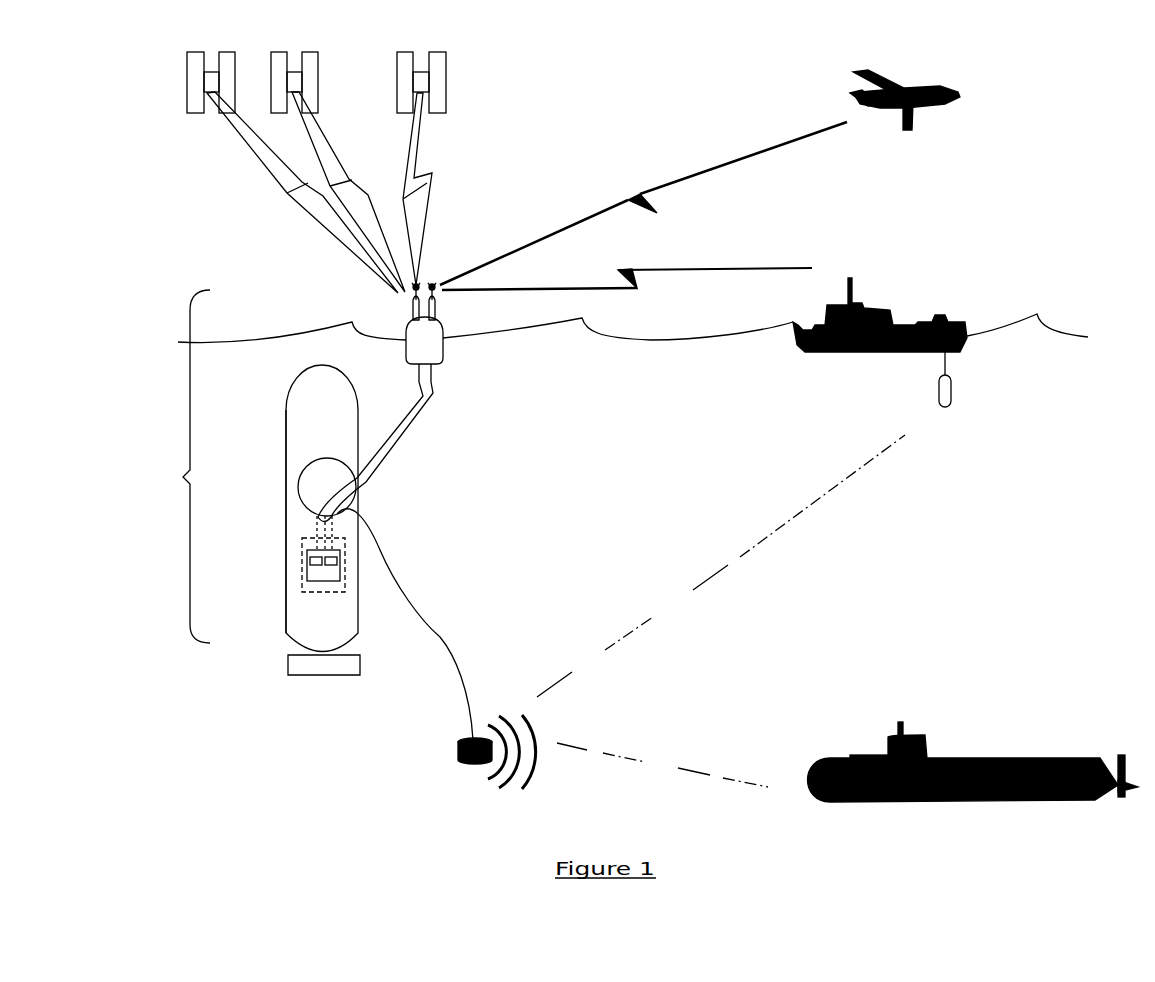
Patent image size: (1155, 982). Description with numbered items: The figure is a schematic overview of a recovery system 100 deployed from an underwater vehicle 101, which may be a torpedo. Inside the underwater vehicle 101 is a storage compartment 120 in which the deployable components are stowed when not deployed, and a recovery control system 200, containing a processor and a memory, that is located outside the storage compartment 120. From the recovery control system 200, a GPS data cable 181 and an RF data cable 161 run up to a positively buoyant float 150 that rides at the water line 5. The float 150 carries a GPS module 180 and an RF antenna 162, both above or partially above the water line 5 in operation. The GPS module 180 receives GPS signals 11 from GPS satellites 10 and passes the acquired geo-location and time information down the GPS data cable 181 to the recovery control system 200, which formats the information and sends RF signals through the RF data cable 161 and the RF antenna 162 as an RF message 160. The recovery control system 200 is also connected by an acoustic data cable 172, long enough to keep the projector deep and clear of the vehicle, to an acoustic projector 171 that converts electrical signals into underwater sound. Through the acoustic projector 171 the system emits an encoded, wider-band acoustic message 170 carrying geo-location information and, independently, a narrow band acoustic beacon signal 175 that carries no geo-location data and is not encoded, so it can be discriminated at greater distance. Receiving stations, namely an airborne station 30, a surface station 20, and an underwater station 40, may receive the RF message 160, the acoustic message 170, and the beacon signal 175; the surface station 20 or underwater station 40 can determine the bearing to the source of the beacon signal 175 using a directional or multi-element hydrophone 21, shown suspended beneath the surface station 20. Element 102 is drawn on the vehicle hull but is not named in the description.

The water line 5 is at (256, 338).
The GPS satellite 10 is at (185, 114).
The GPS signals 11 is at (412, 241).
The surface station 20 is at (923, 299).
The hydrophone 21 is at (955, 391).
The airborne station 30 is at (969, 107).
The underwater station 40 is at (952, 740).
The recovery system 100 is at (159, 466).
The underwater vehicle 101 is at (281, 402).
The capsule hull 102 is at (285, 451).
The storage compartment 120 is at (294, 493).
The float 150 is at (455, 354).
The RF message 160 is at (772, 156).
The RF data cable 161 is at (436, 381).
The RF antenna 162 is at (440, 305).
The acoustic message 170 is at (629, 621).
The acoustic projector 171 is at (490, 732).
The acoustic data cable 172 is at (408, 587).
The narrow band acoustic beacon signal 175 is at (553, 677).
The GPS module 180 is at (409, 313).
The GPS data cable 181 is at (419, 386).
The recovery control system 200 is at (319, 586).